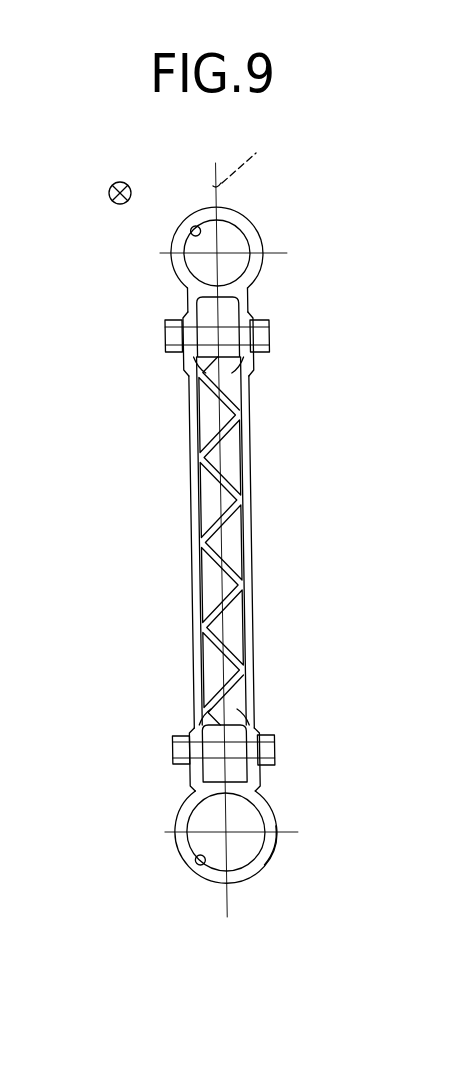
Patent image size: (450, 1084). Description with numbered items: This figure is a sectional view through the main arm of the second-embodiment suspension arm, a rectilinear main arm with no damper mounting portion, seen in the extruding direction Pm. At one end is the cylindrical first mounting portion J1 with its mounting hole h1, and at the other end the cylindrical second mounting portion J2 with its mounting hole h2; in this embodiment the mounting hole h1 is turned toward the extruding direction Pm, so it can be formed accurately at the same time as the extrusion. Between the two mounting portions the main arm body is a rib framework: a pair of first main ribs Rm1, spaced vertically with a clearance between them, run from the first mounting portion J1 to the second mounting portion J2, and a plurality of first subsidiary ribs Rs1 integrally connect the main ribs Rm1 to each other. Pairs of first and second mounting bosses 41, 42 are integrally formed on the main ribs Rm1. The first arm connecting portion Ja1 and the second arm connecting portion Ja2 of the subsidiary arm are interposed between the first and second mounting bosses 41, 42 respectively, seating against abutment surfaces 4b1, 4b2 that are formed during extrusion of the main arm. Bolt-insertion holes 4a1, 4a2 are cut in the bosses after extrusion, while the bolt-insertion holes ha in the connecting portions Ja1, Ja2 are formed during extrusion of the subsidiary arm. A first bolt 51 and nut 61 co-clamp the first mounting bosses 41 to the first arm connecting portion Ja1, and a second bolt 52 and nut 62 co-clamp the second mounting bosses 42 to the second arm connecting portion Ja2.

The extruding direction Pm is at (109, 190).
The first mounting portion J1 is at (258, 217).
The mounting hole h1 is at (191, 229).
The first arm connecting portion Ja1 is at (191, 437).
The bolt-insertion hole 4a1 is at (163, 346).
The first mounting bosses 41 is at (218, 310).
The nut 61 is at (165, 328).
The bolt-insertion holes ha is at (268, 326).
The first bolt 51 is at (270, 342).
The abutment surfaces 4b1 is at (195, 372).
The first main ribs Rm1 is at (251, 466).
The first subsidiary ribs Rs1 is at (245, 548).
The second mounting bosses 42 is at (205, 715).
The abutment surfaces 4b2 is at (200, 790).
The bolt-insertion hole 4a2 is at (186, 764).
The nut 62 is at (173, 742).
The second bolt 52 is at (278, 756).
The second mounting portion J2 is at (261, 882).
The second arm connecting portion Ja2 is at (277, 843).
The mounting hole h2 is at (197, 865).